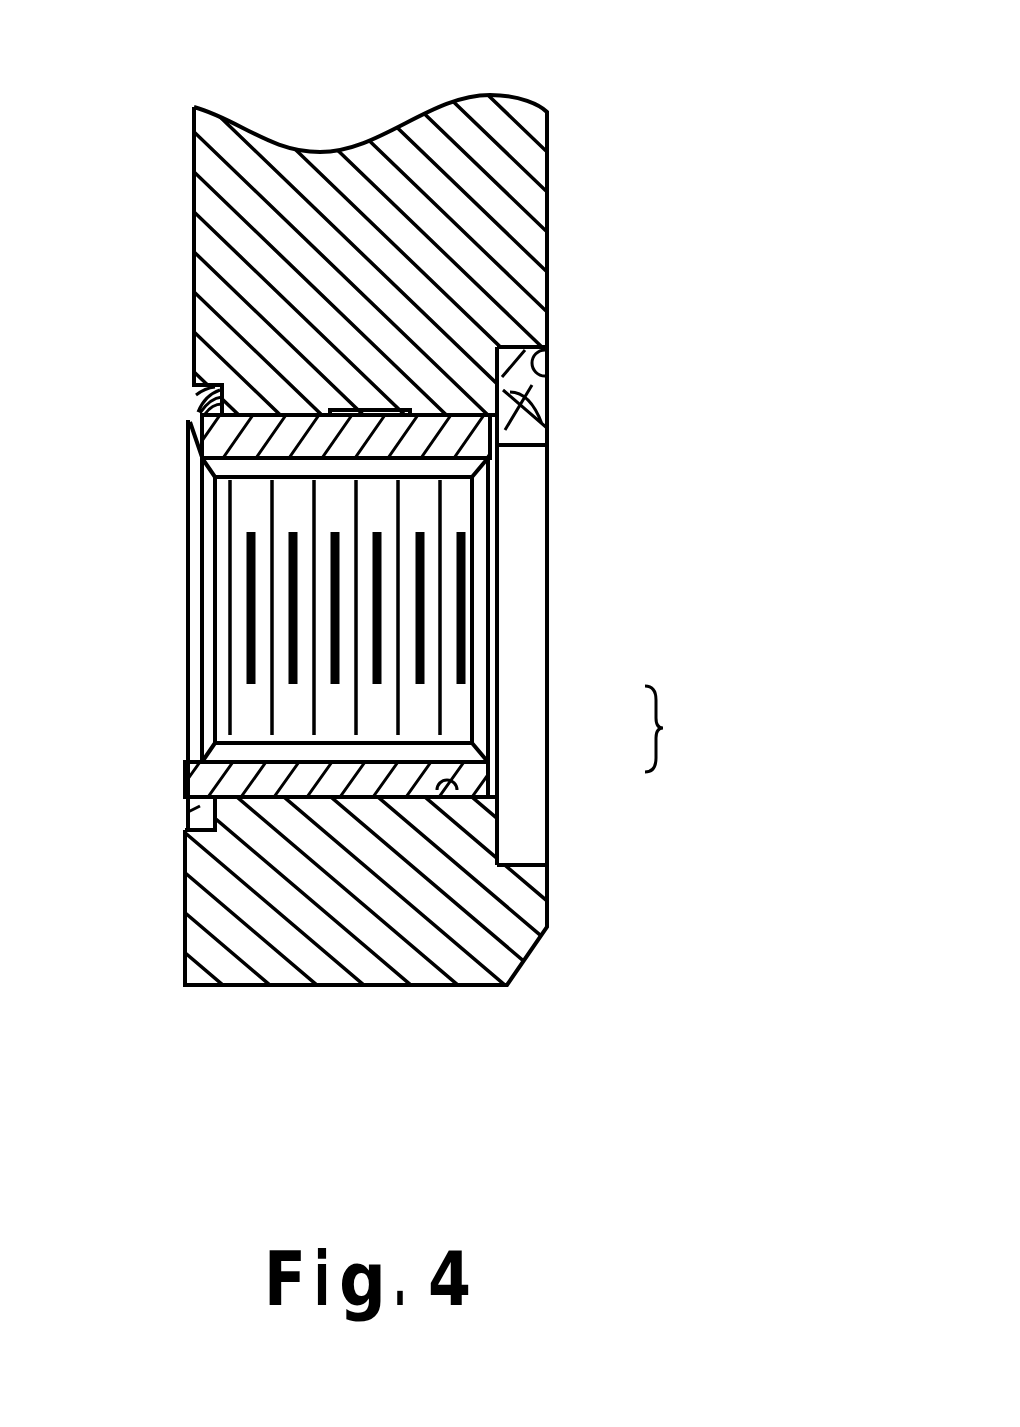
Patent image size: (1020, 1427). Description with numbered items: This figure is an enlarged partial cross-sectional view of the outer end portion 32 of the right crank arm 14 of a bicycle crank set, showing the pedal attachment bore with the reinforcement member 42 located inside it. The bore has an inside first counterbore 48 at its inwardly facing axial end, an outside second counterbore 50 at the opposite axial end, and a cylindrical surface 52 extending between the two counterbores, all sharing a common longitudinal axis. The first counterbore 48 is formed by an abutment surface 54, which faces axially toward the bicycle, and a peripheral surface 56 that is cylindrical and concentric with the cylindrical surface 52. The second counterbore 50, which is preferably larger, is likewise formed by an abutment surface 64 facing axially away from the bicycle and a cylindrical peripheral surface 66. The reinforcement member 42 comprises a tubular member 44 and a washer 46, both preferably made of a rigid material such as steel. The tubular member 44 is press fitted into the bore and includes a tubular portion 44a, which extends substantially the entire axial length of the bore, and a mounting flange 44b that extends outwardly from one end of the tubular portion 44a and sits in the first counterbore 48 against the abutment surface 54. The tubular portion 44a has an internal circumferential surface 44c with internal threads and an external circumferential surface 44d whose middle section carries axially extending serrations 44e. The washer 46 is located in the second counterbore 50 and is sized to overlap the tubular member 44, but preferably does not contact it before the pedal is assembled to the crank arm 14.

The crank arm 14 is at (590, 132).
The outer end portion 32 is at (546, 927).
The reinforcement member 42 is at (680, 729).
The tubular member 44 is at (488, 765).
The tubular portion 44a is at (292, 792).
The mounting flange 44b is at (185, 812).
The internal circumferential surface 44c is at (410, 718).
The external circumferential surface 44d is at (470, 413).
The axially extending serrations 44e is at (367, 800).
The washer 46 is at (525, 795).
The first counterbore 48 is at (190, 555).
The second counterbore 50 is at (523, 541).
The cylindrical surface 52 is at (450, 797).
The abutment surface 54 is at (195, 422).
The peripheral surface 56 is at (192, 405).
The abutment surface 64 is at (548, 427).
The peripheral surface 66 is at (550, 373).